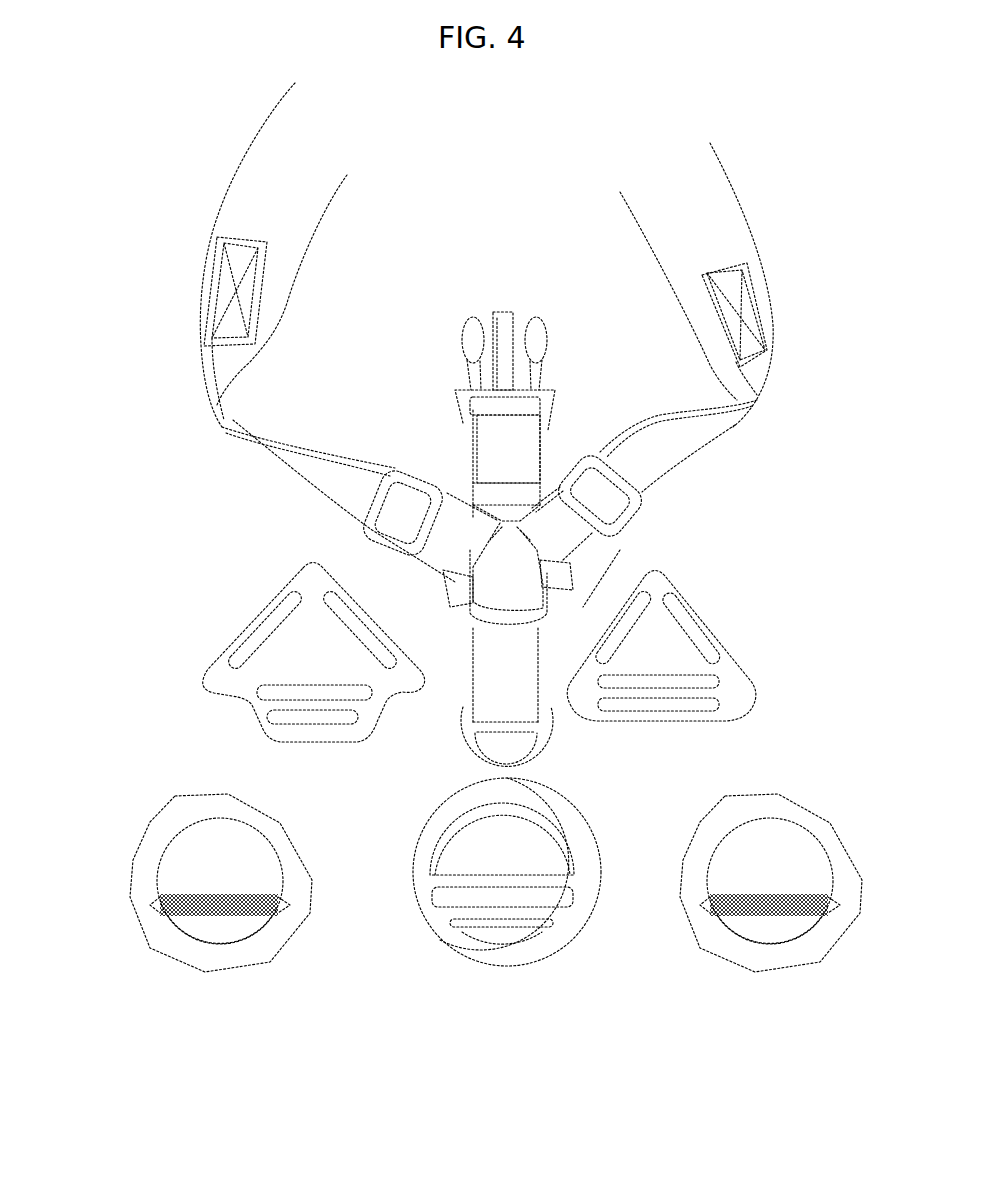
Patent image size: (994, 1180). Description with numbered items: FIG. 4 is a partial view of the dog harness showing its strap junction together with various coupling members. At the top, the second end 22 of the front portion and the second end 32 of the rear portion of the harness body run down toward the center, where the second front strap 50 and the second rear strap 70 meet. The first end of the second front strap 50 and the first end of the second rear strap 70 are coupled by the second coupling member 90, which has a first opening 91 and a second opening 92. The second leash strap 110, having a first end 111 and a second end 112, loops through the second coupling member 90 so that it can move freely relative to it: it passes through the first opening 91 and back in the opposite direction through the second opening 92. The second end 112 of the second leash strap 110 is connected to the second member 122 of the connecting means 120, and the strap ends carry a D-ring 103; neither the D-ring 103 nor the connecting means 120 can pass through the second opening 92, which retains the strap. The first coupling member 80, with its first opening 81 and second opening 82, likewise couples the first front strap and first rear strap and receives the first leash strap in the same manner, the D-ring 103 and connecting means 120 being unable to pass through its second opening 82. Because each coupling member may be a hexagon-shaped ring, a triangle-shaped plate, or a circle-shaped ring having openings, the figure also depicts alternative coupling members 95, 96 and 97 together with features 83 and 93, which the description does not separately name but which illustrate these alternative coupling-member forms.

The second end of the rear portion 32 is at (247, 187).
The second end of the front portion 22 is at (727, 213).
The second front strap 50 is at (703, 443).
The second rear strap 70 is at (308, 475).
The second member of the connecting means 122 is at (508, 343).
The connecting means 120 is at (527, 397).
The first end of the second leash strap 111 is at (493, 447).
The second leash strap 110 is at (517, 593).
The second end of the second leash strap 112 is at (517, 657).
The D-ring 103 is at (537, 757).
The second coupling member 90 is at (473, 600).
The left triangular pad 95 is at (218, 662).
The right triangular pad 96 is at (727, 680).
The first coupling member 80 is at (202, 815).
The first opening of the first coupling member 81 is at (202, 873).
The second opening of the first coupling member 82 is at (243, 923).
The left fastener strip 83 is at (238, 907).
The first opening of the second coupling member 91 is at (752, 873).
The second opening of the second coupling member 92 is at (793, 923).
The right fastener strip 93 is at (788, 907).
The center pad 97 is at (570, 920).